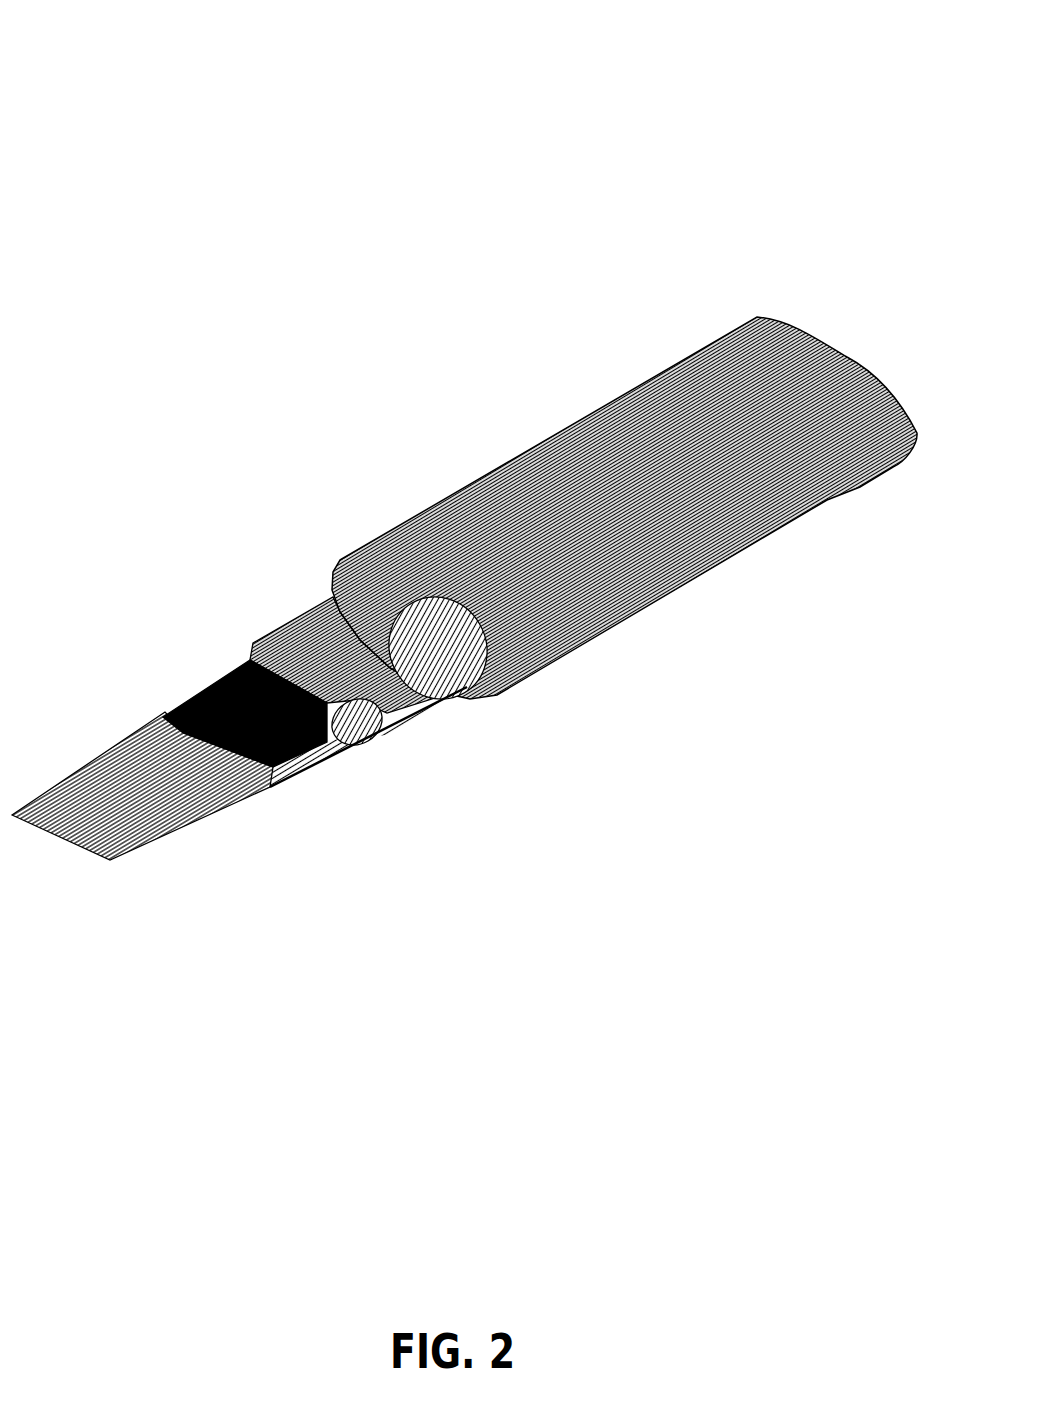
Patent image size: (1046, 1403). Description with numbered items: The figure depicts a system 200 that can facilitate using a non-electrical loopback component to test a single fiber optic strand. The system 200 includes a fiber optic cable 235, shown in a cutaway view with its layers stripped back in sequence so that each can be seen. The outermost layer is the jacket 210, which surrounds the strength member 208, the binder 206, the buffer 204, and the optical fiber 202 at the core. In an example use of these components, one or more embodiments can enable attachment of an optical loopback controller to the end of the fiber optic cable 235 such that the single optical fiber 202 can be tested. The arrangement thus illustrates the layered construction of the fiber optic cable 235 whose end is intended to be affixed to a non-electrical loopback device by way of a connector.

The system 200 is at (84, 32).
The fiber optic cable 235 is at (488, 400).
The optical fiber 202 is at (125, 815).
The buffer 204 is at (238, 725).
The binder 206 is at (350, 727).
The strength member 208 is at (447, 670).
The jacket 210 is at (582, 580).